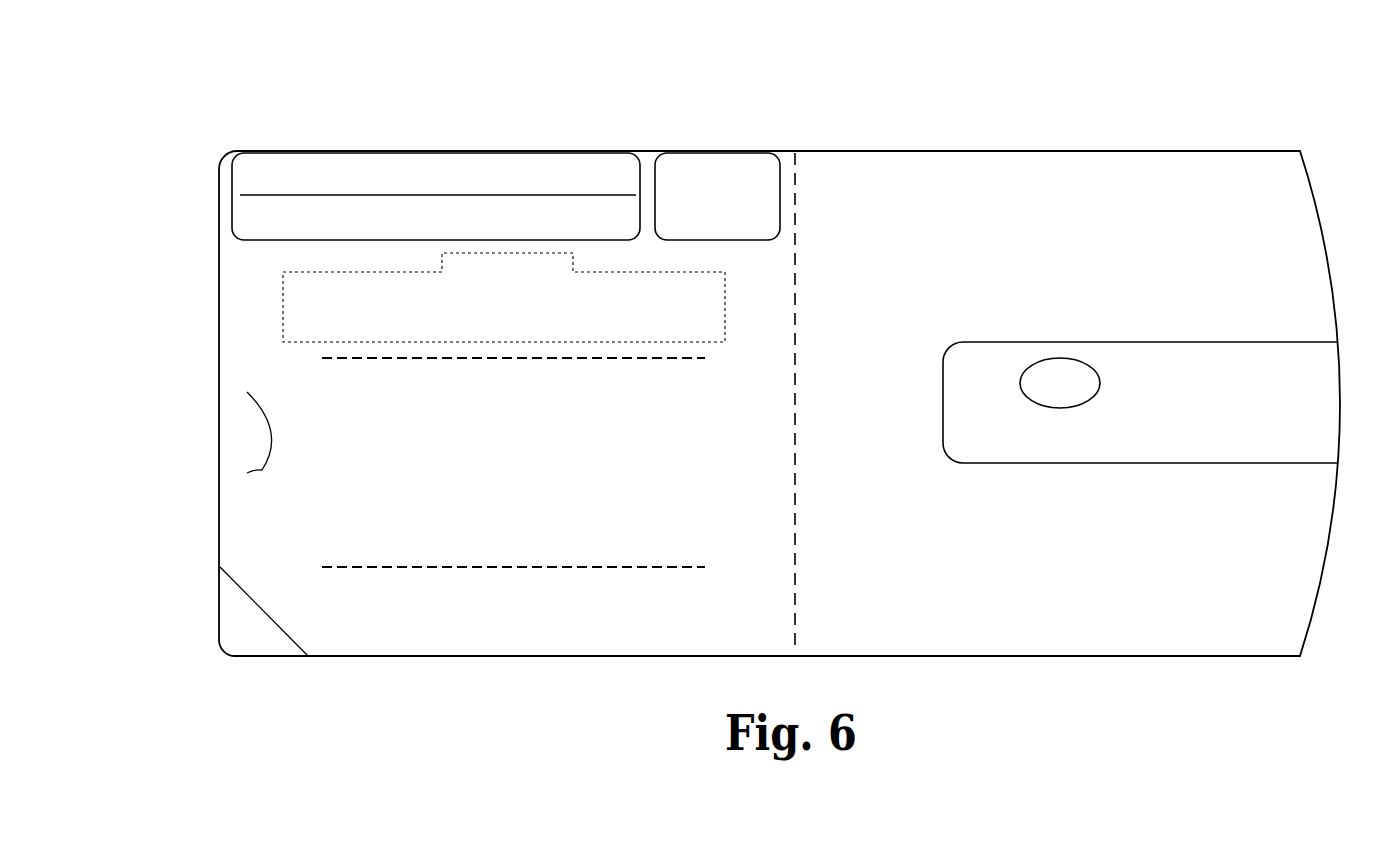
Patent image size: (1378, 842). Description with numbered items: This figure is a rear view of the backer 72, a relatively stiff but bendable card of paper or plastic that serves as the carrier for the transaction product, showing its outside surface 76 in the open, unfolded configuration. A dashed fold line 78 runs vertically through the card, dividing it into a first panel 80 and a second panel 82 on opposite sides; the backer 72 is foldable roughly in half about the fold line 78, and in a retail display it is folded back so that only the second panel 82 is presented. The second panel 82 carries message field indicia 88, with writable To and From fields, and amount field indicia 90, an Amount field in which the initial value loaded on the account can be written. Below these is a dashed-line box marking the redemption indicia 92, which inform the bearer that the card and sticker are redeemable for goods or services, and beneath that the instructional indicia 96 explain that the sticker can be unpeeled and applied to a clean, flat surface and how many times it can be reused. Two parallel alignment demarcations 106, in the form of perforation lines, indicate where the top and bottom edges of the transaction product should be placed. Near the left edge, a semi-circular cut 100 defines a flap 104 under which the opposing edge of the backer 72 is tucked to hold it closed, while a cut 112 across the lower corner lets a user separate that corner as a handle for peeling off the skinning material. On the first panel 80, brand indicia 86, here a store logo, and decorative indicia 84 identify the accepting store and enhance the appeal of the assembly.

The backer 72 is at (228, 88).
The outside surface 76 is at (1130, 630).
The fold line 78 is at (797, 205).
The first panel 80 is at (1105, 182).
The second panel 82 is at (652, 630).
The decorative indicia 84 is at (1298, 340).
The brand indicia 86 is at (1073, 362).
The message field indicia 88 is at (270, 168).
The amount field indicia 90 is at (732, 168).
The redemption indicia 92 is at (283, 303).
The instructional indicia 96 is at (382, 388).
The cut 100 is at (263, 475).
The flap 104 is at (262, 433).
The alignment demarcations 106 is at (537, 567).
The cut 112 is at (278, 630).